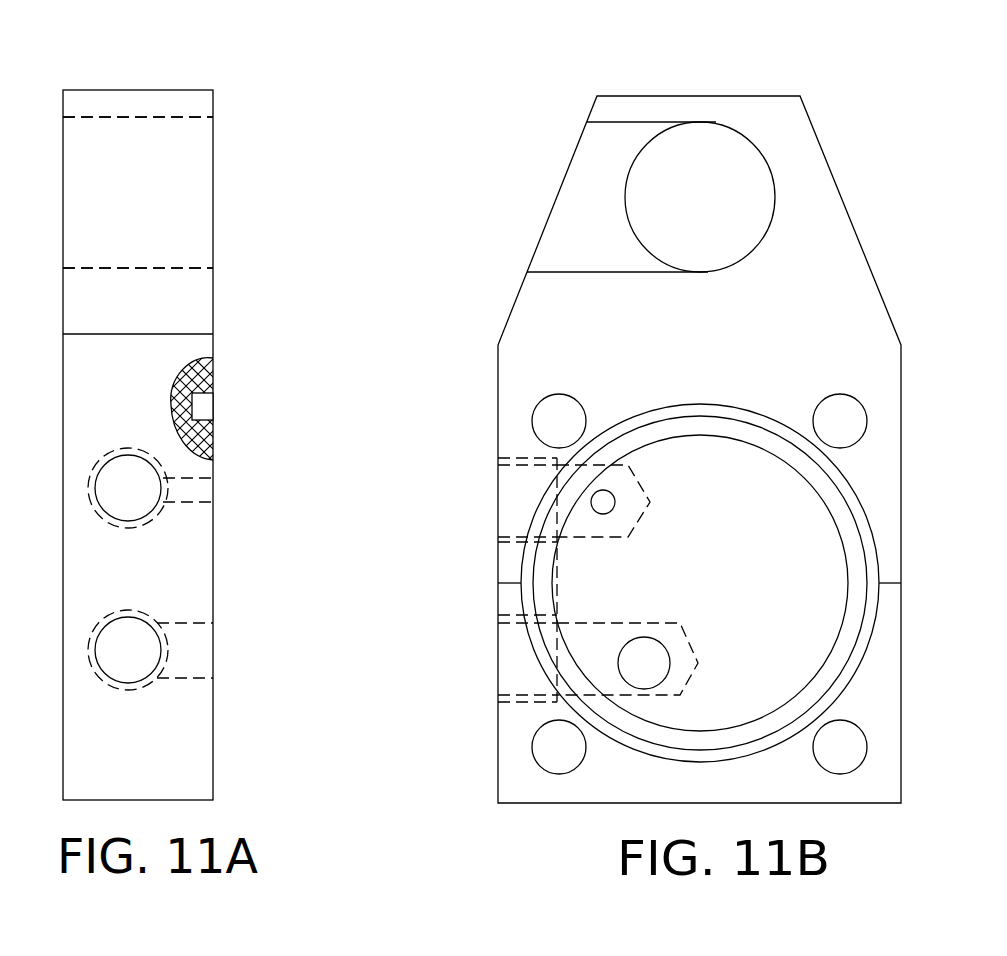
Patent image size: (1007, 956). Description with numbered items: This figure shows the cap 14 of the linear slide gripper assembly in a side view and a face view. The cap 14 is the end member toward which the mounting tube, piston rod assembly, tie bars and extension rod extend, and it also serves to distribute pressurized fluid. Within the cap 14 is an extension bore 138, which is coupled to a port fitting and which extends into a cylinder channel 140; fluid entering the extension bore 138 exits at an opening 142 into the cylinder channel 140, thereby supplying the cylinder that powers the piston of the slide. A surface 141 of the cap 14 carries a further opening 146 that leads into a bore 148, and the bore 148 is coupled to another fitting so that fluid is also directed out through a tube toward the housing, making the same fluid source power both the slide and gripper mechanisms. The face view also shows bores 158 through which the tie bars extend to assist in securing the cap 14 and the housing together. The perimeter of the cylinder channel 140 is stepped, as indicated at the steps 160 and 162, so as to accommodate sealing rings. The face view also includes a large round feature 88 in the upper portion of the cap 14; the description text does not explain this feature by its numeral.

In FIG. 11A, the cap 14 is at (246, 40).
In FIG. 11B, the cap 14 is at (564, 124).
In FIG. 11A, the bore 88 is at (208, 185).
In FIG. 11B, the bore 88 is at (713, 152).
In FIG. 11A, the extension bore 138 is at (157, 517).
In FIG. 11B, the extension bore 138 is at (600, 527).
In FIG. 11A, the cylinder channel 140 is at (241, 421).
In FIG. 11B, the cylinder channel 140 is at (845, 505).
In FIG. 11B, the surface 141 is at (820, 553).
In FIG. 11B, the opening 142 is at (608, 498).
In FIG. 11B, the opening 146 is at (655, 658).
In FIG. 11A, the bore 148 is at (162, 660).
In FIG. 11B, the bore 148 is at (593, 635).
In FIG. 11B, the bores 158 is at (848, 418).
In FIG. 11B, the stepped perimeter portion 160 is at (727, 418).
In FIG. 11B, the stepped perimeter portion 162 is at (757, 433).